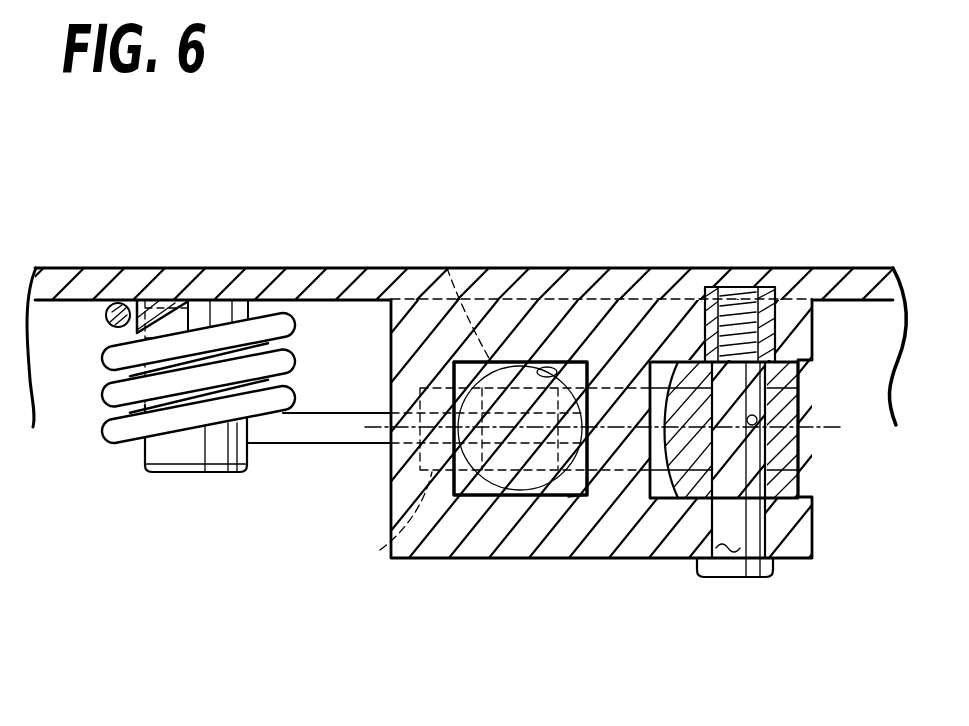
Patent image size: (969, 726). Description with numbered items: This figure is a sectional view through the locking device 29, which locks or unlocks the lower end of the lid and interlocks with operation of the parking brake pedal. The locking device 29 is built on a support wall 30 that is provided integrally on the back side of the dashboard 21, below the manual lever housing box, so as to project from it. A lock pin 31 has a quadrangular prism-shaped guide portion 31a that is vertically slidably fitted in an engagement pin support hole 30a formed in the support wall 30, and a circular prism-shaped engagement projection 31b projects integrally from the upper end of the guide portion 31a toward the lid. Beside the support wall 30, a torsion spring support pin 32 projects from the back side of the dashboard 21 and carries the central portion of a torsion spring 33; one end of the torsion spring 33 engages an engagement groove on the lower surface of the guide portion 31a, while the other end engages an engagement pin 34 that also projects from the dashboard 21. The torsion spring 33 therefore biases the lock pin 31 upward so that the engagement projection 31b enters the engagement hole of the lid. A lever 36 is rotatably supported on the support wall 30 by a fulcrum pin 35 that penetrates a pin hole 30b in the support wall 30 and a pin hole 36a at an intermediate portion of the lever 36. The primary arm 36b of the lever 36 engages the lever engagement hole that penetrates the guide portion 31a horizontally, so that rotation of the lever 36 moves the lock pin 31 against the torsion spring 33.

The dashboard 21 is at (258, 260).
The locking device 29 is at (589, 462).
The support wall 30 is at (535, 572).
The engagement pin support hole 30a is at (563, 362).
The pin hole 30b is at (752, 575).
The lock pin 31 is at (470, 510).
The guide portion 31a is at (568, 497).
The engagement projection 31b is at (447, 268).
The torsion spring support pin 32 is at (177, 473).
The torsion spring 33 is at (315, 428).
The engagement pin 34 is at (112, 394).
The fulcrum pin 35 is at (727, 577).
The lever 36 is at (818, 456).
The pin hole 36a is at (757, 418).
The primary arm 36b is at (380, 550).